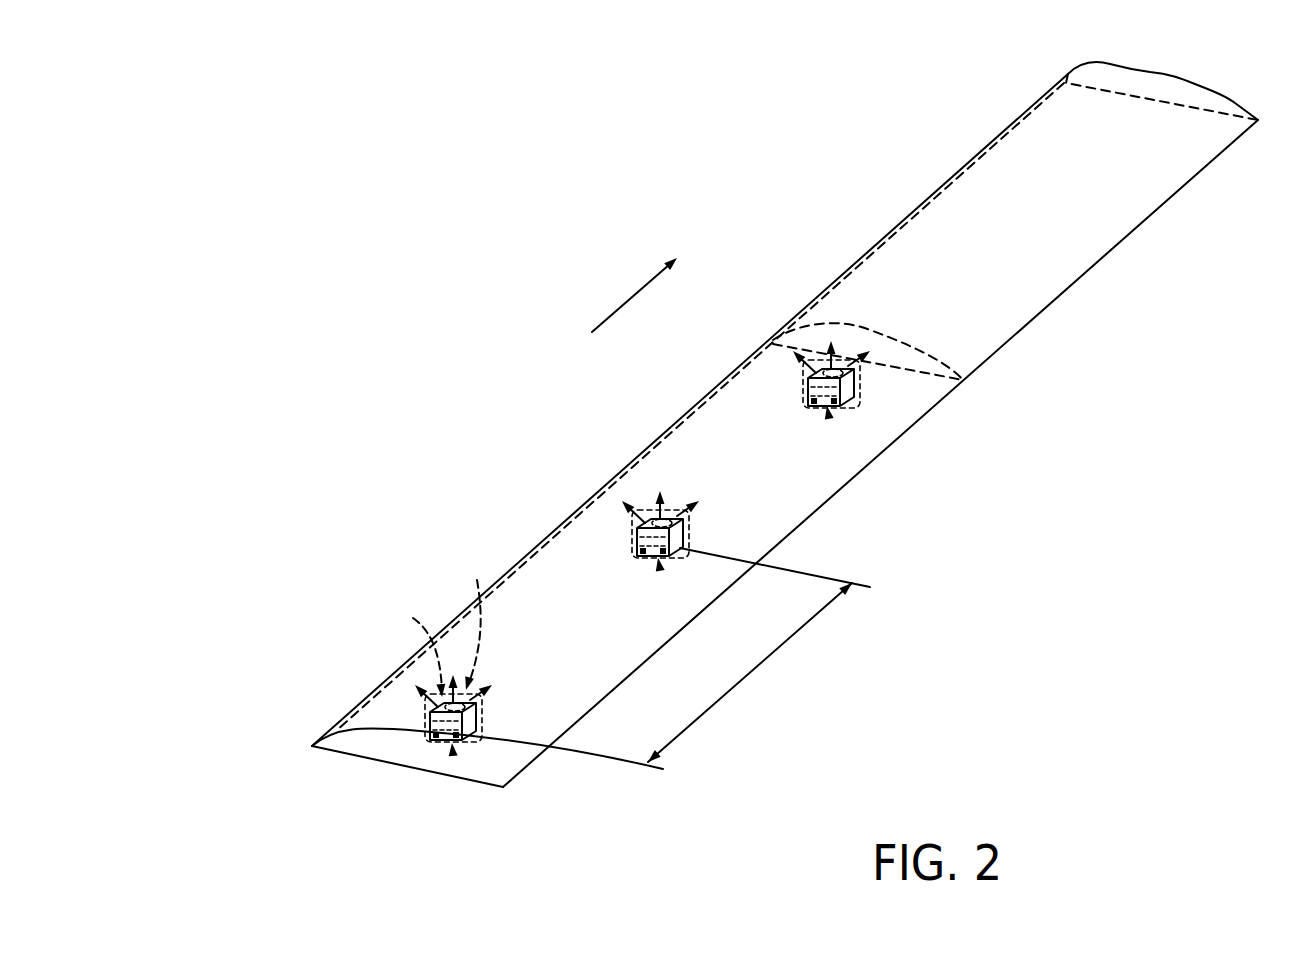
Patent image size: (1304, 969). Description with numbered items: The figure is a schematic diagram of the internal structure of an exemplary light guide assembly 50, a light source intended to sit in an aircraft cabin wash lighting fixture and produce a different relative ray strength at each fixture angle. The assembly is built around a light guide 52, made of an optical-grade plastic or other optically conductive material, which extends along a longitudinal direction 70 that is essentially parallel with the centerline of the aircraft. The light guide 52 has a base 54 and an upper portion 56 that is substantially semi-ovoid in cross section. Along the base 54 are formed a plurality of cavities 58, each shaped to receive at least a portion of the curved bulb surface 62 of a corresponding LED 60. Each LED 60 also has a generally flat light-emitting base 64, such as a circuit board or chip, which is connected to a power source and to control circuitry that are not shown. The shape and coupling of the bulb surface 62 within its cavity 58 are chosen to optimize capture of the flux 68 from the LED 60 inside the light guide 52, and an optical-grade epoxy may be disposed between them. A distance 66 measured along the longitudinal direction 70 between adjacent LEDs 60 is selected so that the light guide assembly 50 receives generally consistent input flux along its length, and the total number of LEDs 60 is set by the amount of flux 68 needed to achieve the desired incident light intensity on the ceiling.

The light guide assembly 50 is at (214, 499).
The light guide 52 is at (785, 430).
The base 54 is at (1065, 293).
The upper portion 56 is at (1087, 193).
The cavity 58 is at (473, 740).
The LED 60 is at (452, 748).
The curved bulb surface 62 is at (412, 646).
The light-emitting base 64 is at (483, 722).
The distance 66 is at (732, 687).
The flux 68 is at (474, 624).
The longitudinal direction 70 is at (633, 295).